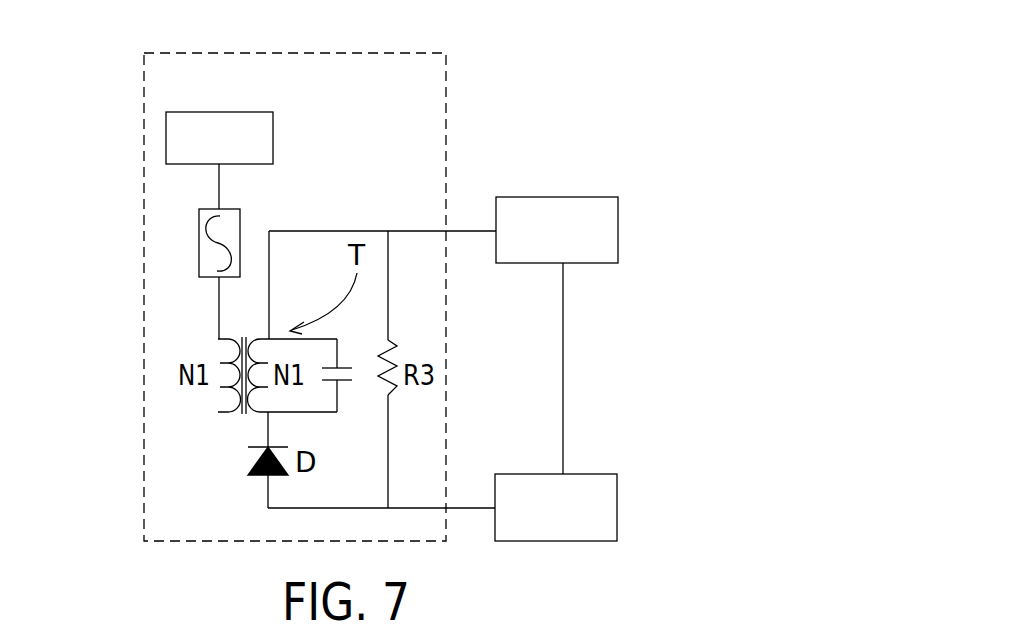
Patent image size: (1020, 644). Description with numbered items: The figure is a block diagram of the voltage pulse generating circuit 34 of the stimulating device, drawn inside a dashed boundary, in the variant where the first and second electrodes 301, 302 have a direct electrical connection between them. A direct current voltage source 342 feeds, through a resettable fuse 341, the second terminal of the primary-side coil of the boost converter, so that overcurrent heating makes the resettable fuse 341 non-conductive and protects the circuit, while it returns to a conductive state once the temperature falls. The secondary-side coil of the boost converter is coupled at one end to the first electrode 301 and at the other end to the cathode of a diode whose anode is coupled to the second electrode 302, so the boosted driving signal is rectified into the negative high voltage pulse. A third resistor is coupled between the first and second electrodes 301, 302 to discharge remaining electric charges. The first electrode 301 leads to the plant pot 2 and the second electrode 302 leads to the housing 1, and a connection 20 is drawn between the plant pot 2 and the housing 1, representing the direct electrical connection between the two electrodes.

The housing 1 is at (617, 508).
The plant pot 2 is at (618, 230).
The connection between plant pot and housing 20 is at (563, 370).
The voltage pulse generating circuit 34 is at (447, 100).
The resettable fuse 341 is at (199, 244).
The direct current voltage source 342 is at (166, 138).
The first electrode 301 is at (413, 231).
The second electrode 302 is at (407, 508).